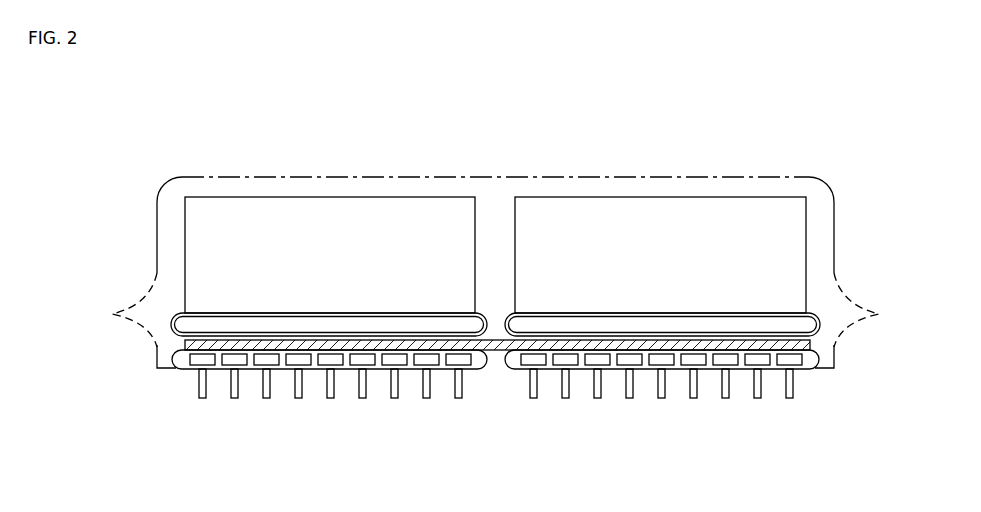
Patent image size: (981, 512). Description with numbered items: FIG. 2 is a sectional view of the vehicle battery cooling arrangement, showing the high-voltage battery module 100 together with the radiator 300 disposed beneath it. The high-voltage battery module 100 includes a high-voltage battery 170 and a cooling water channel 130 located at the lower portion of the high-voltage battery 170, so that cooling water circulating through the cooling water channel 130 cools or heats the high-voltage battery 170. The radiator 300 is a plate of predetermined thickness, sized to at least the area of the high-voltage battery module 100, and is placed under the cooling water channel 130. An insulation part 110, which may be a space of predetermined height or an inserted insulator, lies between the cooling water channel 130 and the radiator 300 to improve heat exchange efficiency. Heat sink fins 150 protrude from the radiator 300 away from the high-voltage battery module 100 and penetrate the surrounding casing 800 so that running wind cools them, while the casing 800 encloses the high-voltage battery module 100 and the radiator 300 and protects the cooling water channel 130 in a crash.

The high-voltage battery module 100 is at (568, 141).
The insulation part 110 is at (806, 346).
The cooling water channel 130 is at (763, 312).
The heat sink fin 150 is at (533, 400).
The high-voltage battery 170 is at (331, 197).
The radiator 300 is at (344, 400).
The casing 800 is at (157, 241).